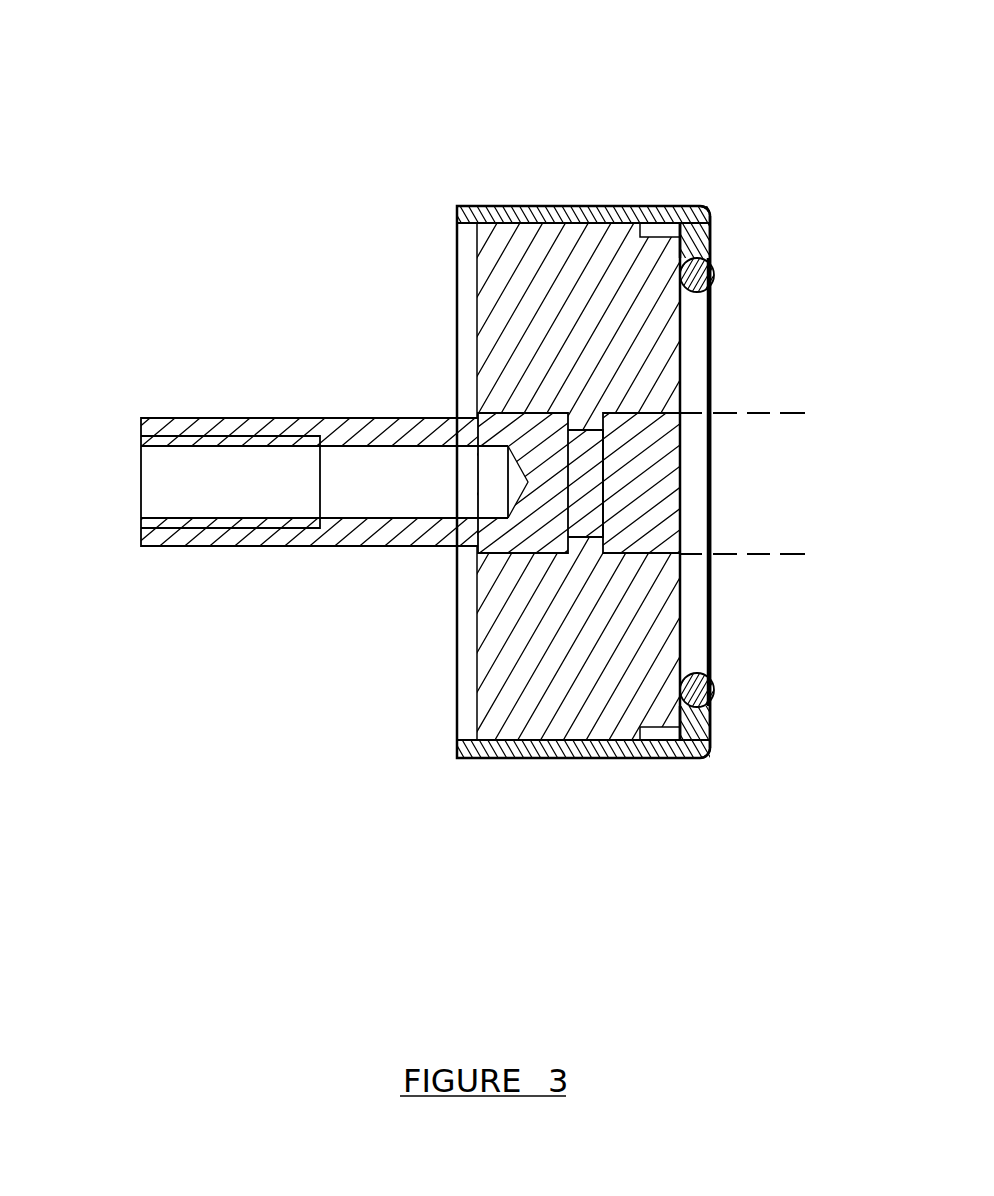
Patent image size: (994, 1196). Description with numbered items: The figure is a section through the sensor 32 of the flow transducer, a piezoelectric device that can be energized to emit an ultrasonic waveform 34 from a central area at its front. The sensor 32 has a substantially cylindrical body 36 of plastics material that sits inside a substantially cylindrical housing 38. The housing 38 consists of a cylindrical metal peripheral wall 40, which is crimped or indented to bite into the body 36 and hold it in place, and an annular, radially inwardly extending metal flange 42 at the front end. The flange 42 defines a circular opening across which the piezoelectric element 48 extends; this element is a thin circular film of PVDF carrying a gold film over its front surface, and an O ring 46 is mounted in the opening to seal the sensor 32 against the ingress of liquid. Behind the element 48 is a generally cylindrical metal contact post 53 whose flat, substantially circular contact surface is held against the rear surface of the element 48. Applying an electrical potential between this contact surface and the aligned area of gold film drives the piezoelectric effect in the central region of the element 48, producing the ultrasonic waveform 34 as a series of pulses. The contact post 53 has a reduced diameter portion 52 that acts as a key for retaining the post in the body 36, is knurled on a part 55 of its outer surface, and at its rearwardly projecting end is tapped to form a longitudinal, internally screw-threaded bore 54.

The sensor 32 is at (717, 167).
The ultrasonic waveform 34 is at (760, 412).
The cylindrical body 36 is at (493, 268).
The housing 38 is at (457, 208).
The peripheral wall 40 is at (580, 758).
The flange 42 is at (698, 758).
The O ring 46 is at (712, 700).
The piezoelectric element 48 is at (682, 628).
The reduced diameter portion 52 is at (585, 537).
The contact post 53 is at (650, 528).
The bore 54 is at (165, 518).
The knurled part 55 is at (515, 412).